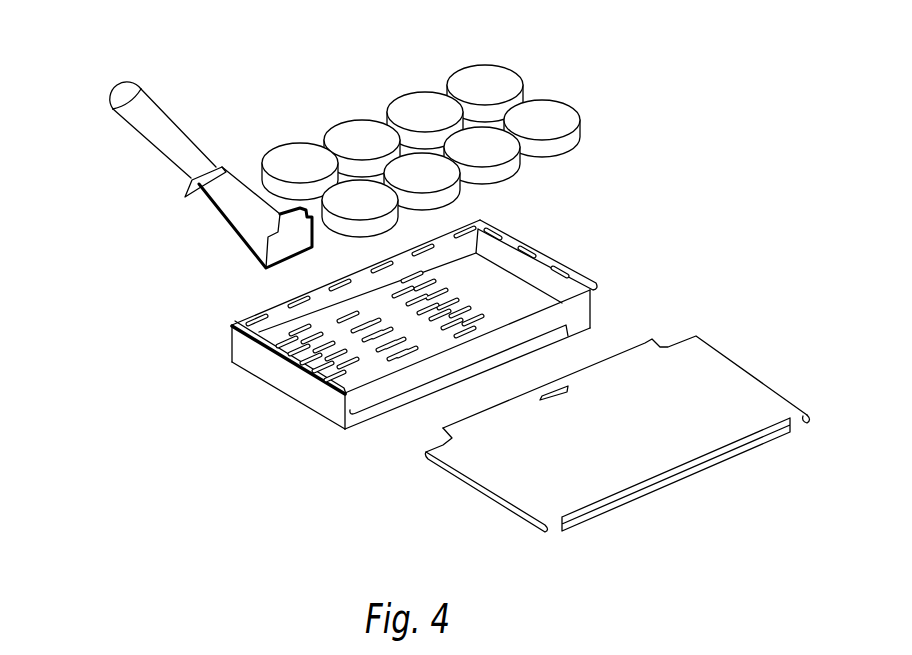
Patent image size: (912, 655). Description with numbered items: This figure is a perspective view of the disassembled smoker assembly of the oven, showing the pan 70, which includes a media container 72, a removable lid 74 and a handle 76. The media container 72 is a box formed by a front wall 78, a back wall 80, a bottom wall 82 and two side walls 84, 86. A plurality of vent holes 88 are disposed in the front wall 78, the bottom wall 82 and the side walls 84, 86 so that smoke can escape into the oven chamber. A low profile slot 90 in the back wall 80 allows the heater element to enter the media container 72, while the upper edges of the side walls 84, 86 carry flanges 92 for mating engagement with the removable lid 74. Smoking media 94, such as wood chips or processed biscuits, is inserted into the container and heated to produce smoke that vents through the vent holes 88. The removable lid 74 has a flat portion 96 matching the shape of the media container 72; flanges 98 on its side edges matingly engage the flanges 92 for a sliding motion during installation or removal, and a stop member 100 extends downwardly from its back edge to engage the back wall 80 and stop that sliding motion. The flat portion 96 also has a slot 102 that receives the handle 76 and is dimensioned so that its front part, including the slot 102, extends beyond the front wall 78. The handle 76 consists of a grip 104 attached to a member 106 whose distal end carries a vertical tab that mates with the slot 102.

The pan 70 is at (160, 309).
The media container 72 is at (520, 230).
The removable lid 74 is at (727, 360).
The handle 76 is at (183, 137).
The front wall 78 is at (462, 222).
The back wall 80 is at (345, 413).
The bottom wall 82 is at (240, 365).
The side wall 84 is at (592, 302).
The side wall 86 is at (285, 385).
The vent holes 88 is at (292, 303).
The low profile slot 90 is at (392, 411).
The flanges 92 is at (232, 326).
The smoking media 94 is at (532, 78).
The flat portion 96 is at (607, 450).
The flanges 98 is at (808, 412).
The stop member 100 is at (650, 492).
The slot 102 is at (570, 390).
The grip 104 is at (134, 135).
The member 106 is at (220, 216).